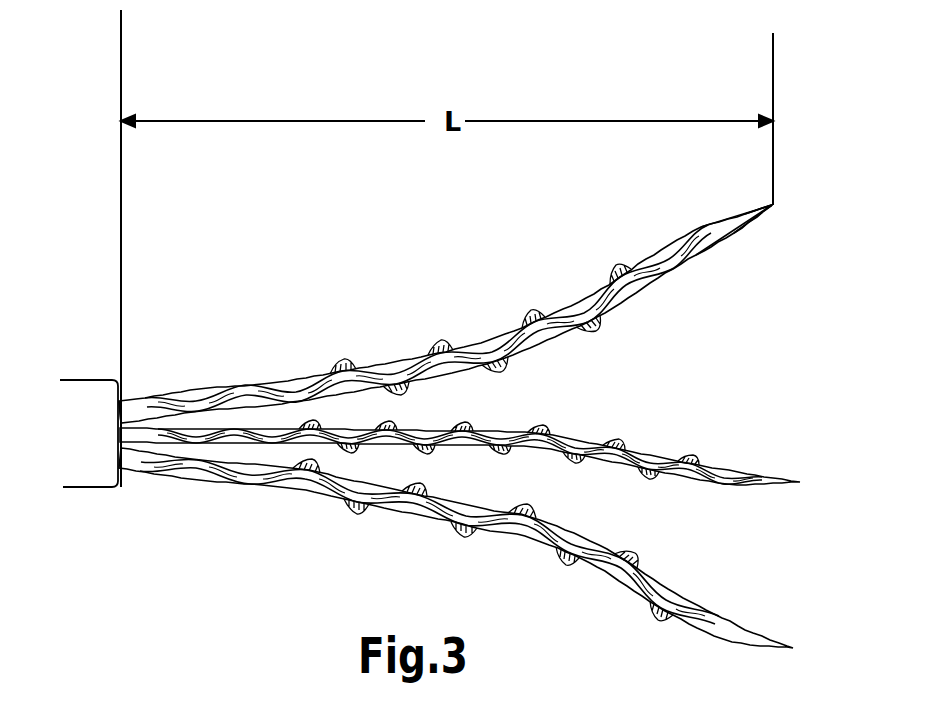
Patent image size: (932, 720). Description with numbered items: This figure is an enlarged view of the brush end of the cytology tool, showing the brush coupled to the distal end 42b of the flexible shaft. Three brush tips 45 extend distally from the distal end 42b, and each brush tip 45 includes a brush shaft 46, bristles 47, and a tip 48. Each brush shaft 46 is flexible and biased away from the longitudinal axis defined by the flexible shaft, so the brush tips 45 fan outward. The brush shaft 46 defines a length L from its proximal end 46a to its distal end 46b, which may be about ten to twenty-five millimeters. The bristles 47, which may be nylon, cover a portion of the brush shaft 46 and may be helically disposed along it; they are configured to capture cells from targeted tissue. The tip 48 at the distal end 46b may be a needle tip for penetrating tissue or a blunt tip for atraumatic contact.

The distal end of the flexible shaft 42b is at (121, 476).
The brush tip 45 is at (458, 389).
The brush shaft 46 is at (395, 352).
The proximal end of the brush shaft 46a is at (122, 401).
The distal end of the brush shaft 46b is at (773, 205).
The bristles 47 is at (594, 333).
The tip 48 is at (736, 234).